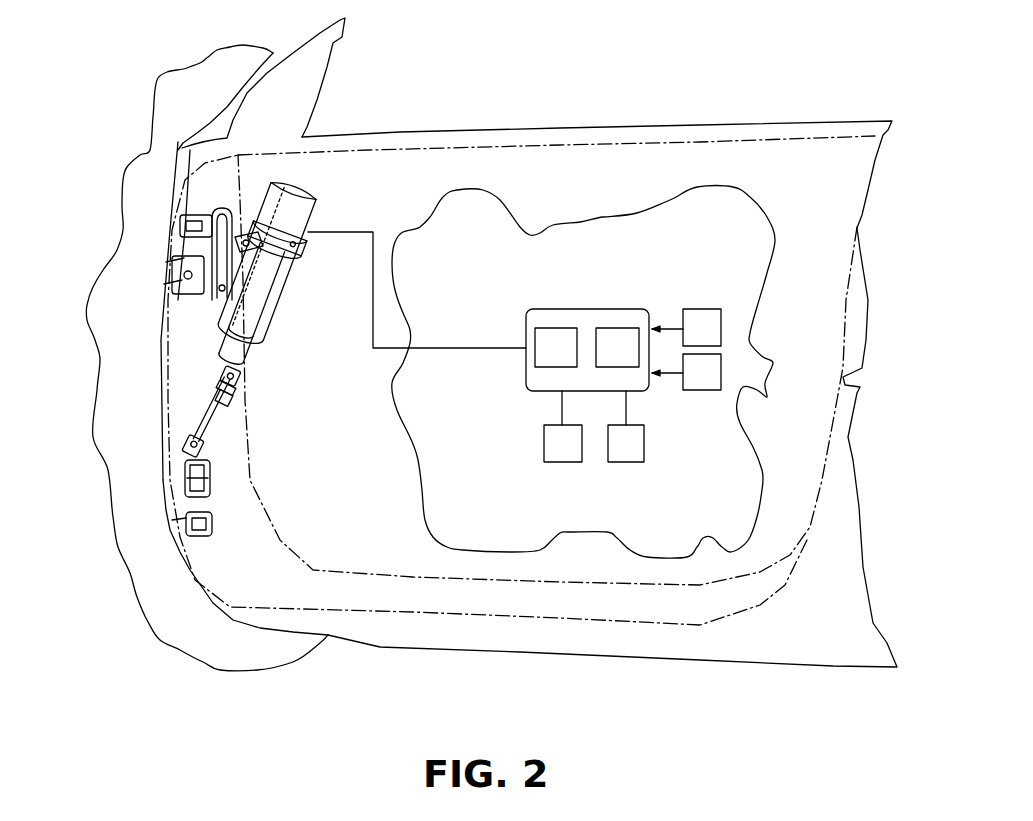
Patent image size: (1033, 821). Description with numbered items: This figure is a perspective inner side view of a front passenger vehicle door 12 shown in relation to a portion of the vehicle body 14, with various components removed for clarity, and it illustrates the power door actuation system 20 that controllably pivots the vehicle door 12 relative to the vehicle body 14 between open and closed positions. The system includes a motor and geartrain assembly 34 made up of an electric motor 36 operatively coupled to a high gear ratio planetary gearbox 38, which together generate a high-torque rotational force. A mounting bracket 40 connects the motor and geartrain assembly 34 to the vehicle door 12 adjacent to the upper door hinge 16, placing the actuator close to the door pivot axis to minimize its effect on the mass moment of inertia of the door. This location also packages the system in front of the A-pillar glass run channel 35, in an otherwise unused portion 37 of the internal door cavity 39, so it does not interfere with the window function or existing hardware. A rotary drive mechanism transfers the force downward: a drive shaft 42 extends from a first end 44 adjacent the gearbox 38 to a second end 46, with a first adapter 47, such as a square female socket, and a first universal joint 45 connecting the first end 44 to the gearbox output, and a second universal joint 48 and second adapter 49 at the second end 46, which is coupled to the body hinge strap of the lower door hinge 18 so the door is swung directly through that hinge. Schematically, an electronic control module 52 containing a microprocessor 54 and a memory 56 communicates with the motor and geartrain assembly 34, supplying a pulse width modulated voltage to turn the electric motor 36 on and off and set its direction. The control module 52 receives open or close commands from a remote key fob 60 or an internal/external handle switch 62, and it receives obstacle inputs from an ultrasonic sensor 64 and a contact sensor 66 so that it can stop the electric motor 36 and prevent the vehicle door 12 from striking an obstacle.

The vehicle door 12 is at (413, 632).
The vehicle body 14 is at (205, 58).
The upper door hinge 16 is at (189, 226).
The lower door hinge 18 is at (192, 530).
The power door actuation system 20 is at (312, 311).
The motor and geartrain assembly 34 is at (322, 218).
The A-pillar glass run channel 35 is at (308, 540).
The electric motor 36 is at (293, 197).
The portion of internal door cavity 37 is at (197, 327).
The high gear ratio planetary gearbox 38 is at (267, 308).
The internal door cavity 39 is at (583, 372).
The mounting bracket 40 is at (229, 208).
The drive shaft 42 is at (222, 413).
The first end of drive shaft 44 is at (236, 397).
The first universal joint 45 is at (222, 378).
The second end of drive shaft 46 is at (205, 432).
The first adapter 47 is at (236, 372).
The second universal joint 48 is at (188, 447).
The second adapter 49 is at (197, 477).
The electronic control module 52 is at (625, 307).
The microprocessor 54 is at (560, 338).
The memory 56 is at (615, 338).
The remote key fob 60 is at (565, 452).
The internal/external handle switch 62 is at (622, 453).
The ultrasonic sensor 64 is at (702, 315).
The contact sensor 66 is at (700, 378).